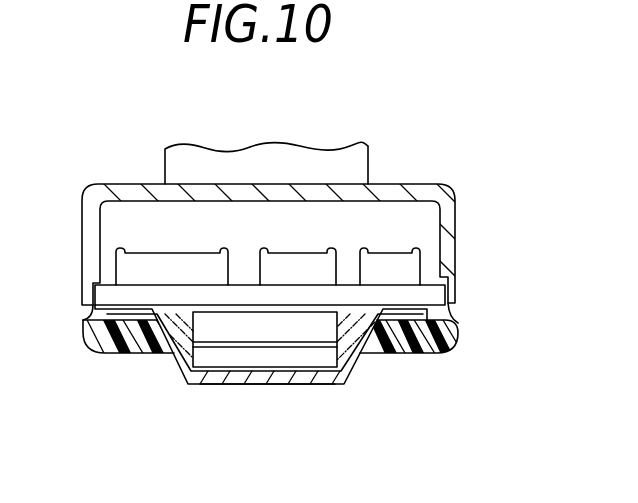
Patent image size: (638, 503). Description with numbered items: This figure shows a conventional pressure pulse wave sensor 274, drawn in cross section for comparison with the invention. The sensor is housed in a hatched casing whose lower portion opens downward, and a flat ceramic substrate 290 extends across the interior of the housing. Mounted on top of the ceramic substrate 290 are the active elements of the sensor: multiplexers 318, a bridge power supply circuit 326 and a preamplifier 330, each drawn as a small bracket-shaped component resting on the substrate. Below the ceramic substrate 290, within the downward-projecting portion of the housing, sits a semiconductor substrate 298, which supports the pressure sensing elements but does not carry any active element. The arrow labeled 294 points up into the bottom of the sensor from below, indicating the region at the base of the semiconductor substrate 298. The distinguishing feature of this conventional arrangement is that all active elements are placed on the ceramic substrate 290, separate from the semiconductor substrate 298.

The conventional pressure pulse wave sensor 274 is at (140, 122).
The ceramic substrate 290 is at (430, 296).
The bottom opening 294 is at (257, 374).
The semiconductor substrate 298 is at (313, 368).
The multiplexers 318 is at (142, 270).
The bridge power supply circuit 326 is at (295, 268).
The preamplifier 330 is at (388, 268).